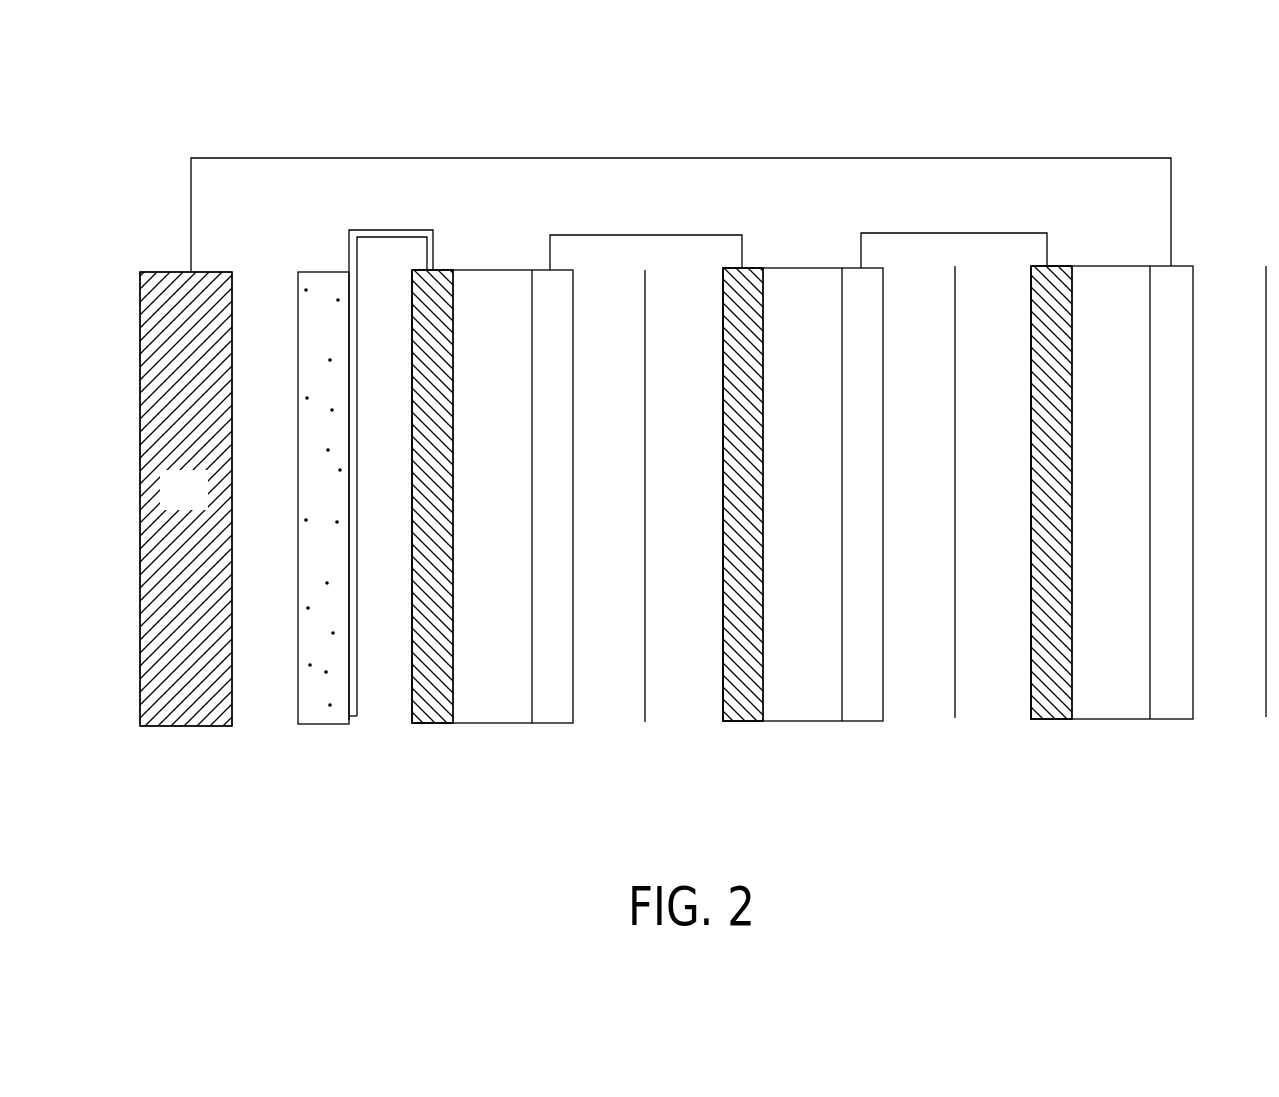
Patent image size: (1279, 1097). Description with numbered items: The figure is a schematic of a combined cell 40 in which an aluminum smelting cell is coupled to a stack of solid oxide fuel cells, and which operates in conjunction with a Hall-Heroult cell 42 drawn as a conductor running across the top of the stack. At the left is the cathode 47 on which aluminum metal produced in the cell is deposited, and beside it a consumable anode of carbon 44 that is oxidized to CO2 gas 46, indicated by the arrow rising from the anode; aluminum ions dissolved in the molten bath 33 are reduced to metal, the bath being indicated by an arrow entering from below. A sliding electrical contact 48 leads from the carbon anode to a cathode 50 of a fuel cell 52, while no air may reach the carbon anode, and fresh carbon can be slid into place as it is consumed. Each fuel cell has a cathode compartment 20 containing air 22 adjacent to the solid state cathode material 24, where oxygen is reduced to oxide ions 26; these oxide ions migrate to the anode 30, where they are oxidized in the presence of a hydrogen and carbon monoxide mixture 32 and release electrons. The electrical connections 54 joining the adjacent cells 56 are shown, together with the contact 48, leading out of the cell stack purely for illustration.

The combined cell 40 is at (671, 98).
The Hall-Heroult cell 42 is at (292, 178).
The anode of carbon 44 is at (341, 502).
The CO2 gas 46 is at (290, 312).
The cathode 47 is at (199, 503).
The sliding electrical contact 48 is at (390, 229).
The cathode 50 is at (435, 723).
The fuel cell 52 is at (480, 235).
The electrical connection 54 is at (638, 233).
The adjacent cells 56 is at (784, 233).
The cathode compartment 20 is at (376, 726).
The air 22 is at (400, 535).
The solid state cathode material 24 is at (742, 721).
The oxide ions 26 is at (614, 447).
The anode 30 is at (557, 723).
The hydrogen and carbon monoxide mixture 32 is at (1237, 705).
The molten bath 33 is at (268, 706).